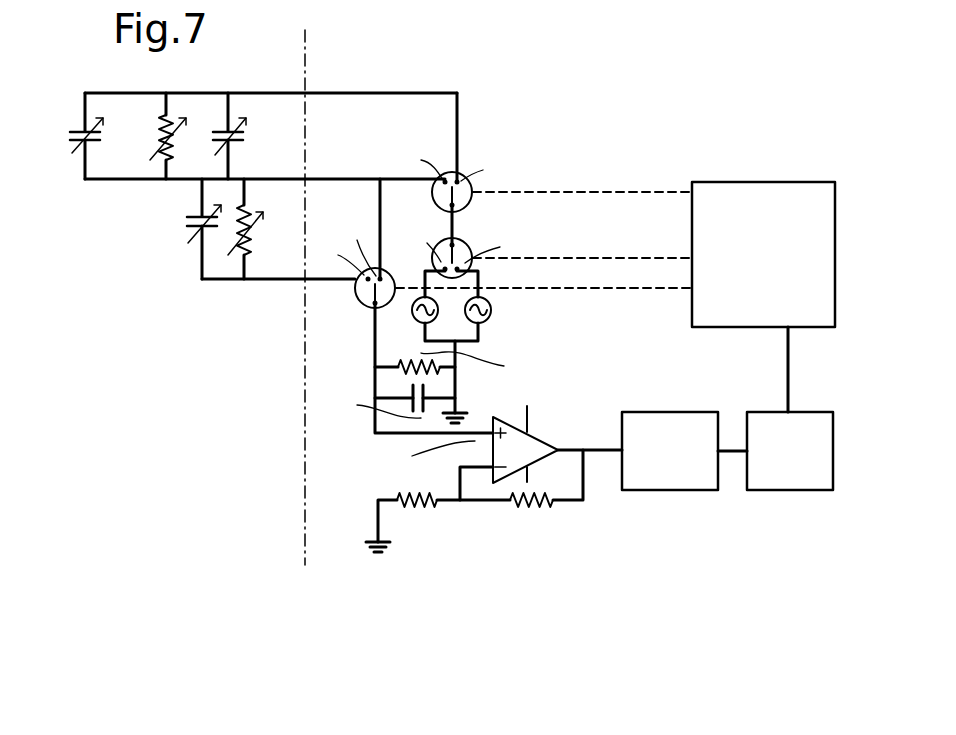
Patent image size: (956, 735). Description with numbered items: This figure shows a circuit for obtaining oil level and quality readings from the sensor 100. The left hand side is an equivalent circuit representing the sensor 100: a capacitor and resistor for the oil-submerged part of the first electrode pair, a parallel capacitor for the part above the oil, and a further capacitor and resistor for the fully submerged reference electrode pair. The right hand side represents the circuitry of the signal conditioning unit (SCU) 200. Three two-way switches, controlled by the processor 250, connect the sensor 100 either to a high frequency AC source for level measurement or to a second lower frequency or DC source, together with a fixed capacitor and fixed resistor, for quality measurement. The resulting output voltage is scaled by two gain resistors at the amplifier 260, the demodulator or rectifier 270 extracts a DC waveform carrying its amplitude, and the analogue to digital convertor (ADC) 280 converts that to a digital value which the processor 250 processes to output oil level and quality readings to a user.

The sensor 100 is at (297, 582).
The signal conditioning unit (SCU) 200 is at (576, 388).
The processor 250 is at (718, 195).
The amplifier 260 is at (501, 481).
The demodulator (or rectifier) 270 is at (697, 478).
The analogue to digital convertor (ADC) 280 is at (790, 479).